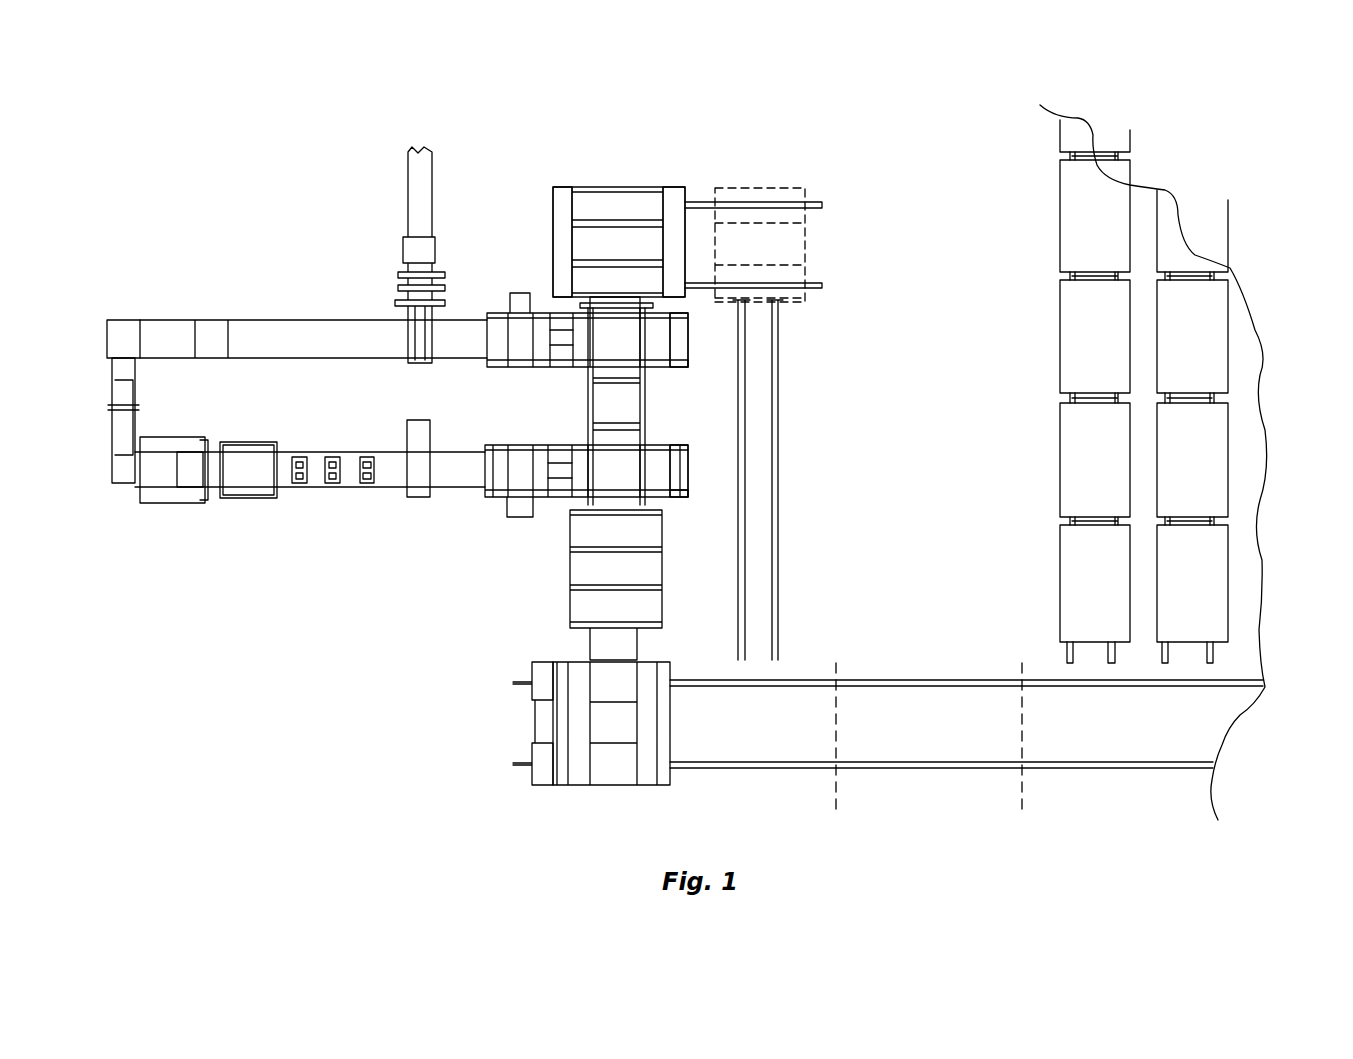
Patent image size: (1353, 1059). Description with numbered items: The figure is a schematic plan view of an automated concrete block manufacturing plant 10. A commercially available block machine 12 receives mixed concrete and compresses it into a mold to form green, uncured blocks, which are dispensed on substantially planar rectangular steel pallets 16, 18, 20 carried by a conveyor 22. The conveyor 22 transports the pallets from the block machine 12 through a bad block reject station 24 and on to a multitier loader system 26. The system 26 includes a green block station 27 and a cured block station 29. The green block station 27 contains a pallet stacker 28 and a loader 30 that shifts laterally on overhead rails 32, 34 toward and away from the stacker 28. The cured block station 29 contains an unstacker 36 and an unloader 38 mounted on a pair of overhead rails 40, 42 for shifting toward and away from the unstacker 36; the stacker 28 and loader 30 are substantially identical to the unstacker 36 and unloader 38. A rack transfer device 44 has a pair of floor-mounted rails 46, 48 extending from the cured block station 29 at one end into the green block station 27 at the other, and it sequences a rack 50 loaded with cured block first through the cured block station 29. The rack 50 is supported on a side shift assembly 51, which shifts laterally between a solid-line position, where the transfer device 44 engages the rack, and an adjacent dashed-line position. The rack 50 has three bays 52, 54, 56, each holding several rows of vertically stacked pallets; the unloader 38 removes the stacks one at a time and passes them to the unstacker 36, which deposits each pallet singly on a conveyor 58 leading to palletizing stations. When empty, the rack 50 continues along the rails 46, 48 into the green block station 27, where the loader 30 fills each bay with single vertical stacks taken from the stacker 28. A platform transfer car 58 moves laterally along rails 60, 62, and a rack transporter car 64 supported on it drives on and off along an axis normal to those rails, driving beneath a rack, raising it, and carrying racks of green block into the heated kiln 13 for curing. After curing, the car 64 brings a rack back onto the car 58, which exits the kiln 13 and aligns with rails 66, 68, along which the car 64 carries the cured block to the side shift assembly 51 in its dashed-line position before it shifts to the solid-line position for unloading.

The automated concrete block manufacturing plant 10 is at (613, 145).
The block machine 12 is at (160, 482).
The heated kiln 13 is at (1268, 300).
The pallet 16 is at (302, 456).
The pallet 18 is at (333, 484).
The pallet 20 is at (367, 456).
The conveyor 22 is at (395, 485).
The bad block reject station 24 is at (428, 496).
The multitier loader system 26 is at (562, 176).
The green block station 27 is at (535, 527).
The pallet stacker 28 is at (522, 455).
The cured block station 29 is at (543, 295).
The loader 30 is at (566, 455).
The overhead rail 32 is at (665, 455).
The overhead rail 34 is at (682, 497).
The unstacker 36 is at (522, 327).
The unloader 38 is at (563, 360).
The overhead rail 40 is at (686, 314).
The overhead rail 42 is at (686, 367).
The rack transfer device 44 is at (652, 385).
The rail 46 is at (640, 397).
The rail 48 is at (645, 427).
The rack 50 is at (638, 187).
The side shift assembly 51 is at (555, 208).
The bay 52 is at (670, 186).
The bay 54 is at (717, 200).
The bay 56 is at (636, 296).
The platform transfer car 58 is at (465, 328).
The rail 60 is at (803, 680).
The rail 62 is at (941, 765).
The rack transporter car 64 is at (616, 785).
The rail 66 is at (746, 555).
The rail 68 is at (779, 572).